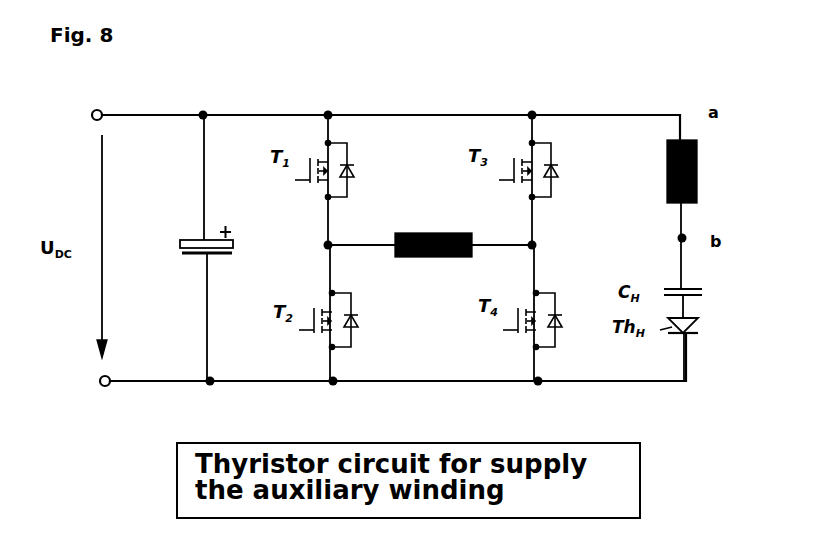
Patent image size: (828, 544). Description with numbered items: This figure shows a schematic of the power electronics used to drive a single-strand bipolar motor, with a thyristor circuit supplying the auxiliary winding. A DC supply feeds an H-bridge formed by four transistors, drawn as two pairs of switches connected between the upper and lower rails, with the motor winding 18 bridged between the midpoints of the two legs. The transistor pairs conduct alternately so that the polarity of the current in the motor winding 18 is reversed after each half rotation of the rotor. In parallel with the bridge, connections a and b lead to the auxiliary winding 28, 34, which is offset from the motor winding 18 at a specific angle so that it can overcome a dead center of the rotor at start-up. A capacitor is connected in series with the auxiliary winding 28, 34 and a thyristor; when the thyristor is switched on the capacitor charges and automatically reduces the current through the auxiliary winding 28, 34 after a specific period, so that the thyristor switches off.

The motor winding 18 is at (430, 233).
The auxiliary winding 28 is at (716, 214).
The auxiliary winding 34 is at (716, 214).